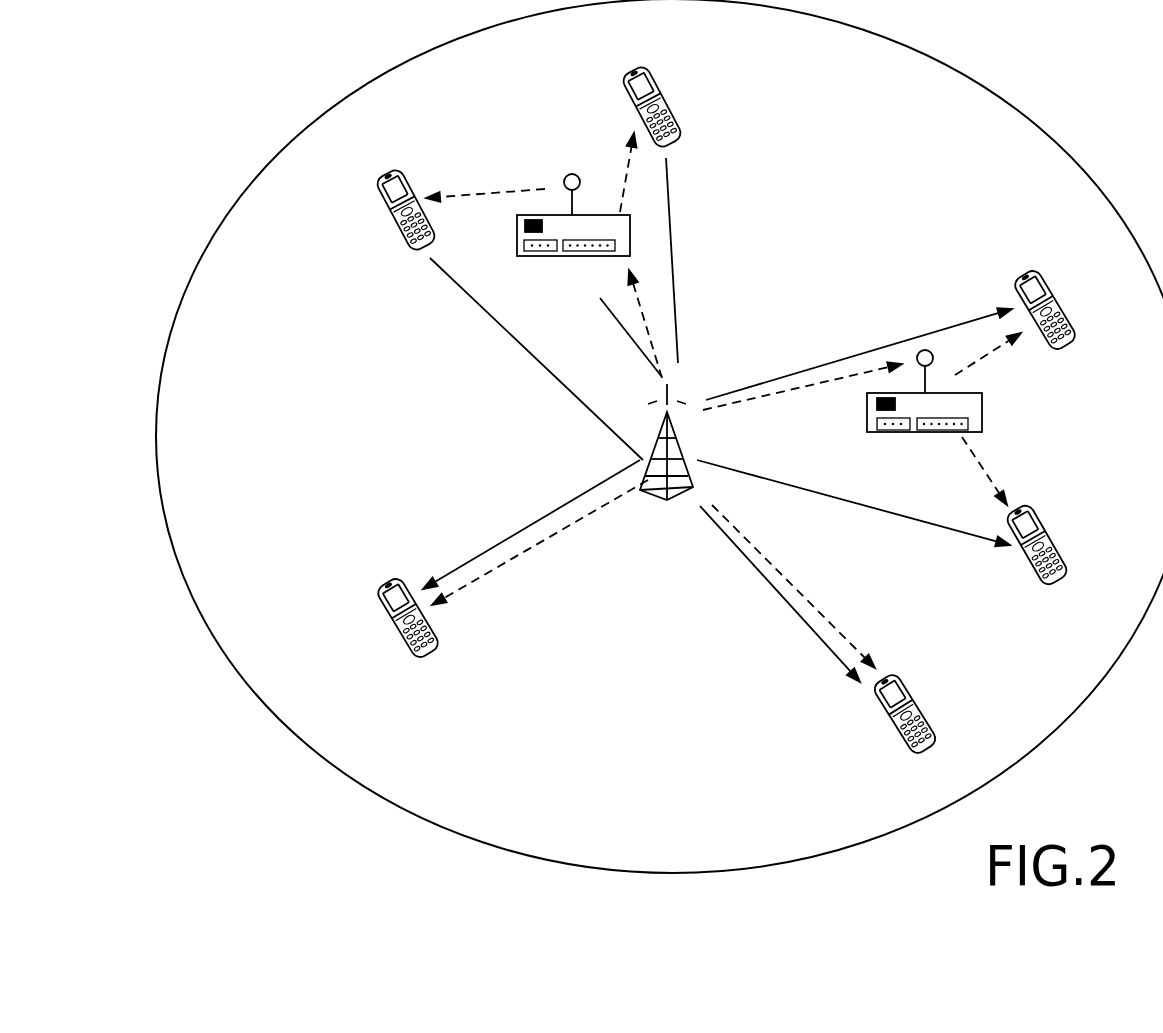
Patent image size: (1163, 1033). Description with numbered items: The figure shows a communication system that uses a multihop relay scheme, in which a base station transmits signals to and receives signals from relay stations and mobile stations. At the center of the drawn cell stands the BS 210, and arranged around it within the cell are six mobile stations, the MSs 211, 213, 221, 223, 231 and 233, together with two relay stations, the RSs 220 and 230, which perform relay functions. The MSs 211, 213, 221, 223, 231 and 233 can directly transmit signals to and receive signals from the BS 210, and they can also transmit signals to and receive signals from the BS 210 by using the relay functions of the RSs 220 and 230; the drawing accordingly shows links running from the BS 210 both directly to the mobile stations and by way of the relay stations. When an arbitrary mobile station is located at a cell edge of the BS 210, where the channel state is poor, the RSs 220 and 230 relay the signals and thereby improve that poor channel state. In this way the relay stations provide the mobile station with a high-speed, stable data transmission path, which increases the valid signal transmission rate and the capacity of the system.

The BS 210 is at (683, 447).
The MS 211 is at (397, 585).
The MS 213 is at (890, 676).
The RS 220 is at (867, 413).
The MS 221 is at (1029, 271).
The MS 223 is at (1023, 510).
The RS 230 is at (517, 234).
The MS 231 is at (392, 175).
The MS 233 is at (638, 74).